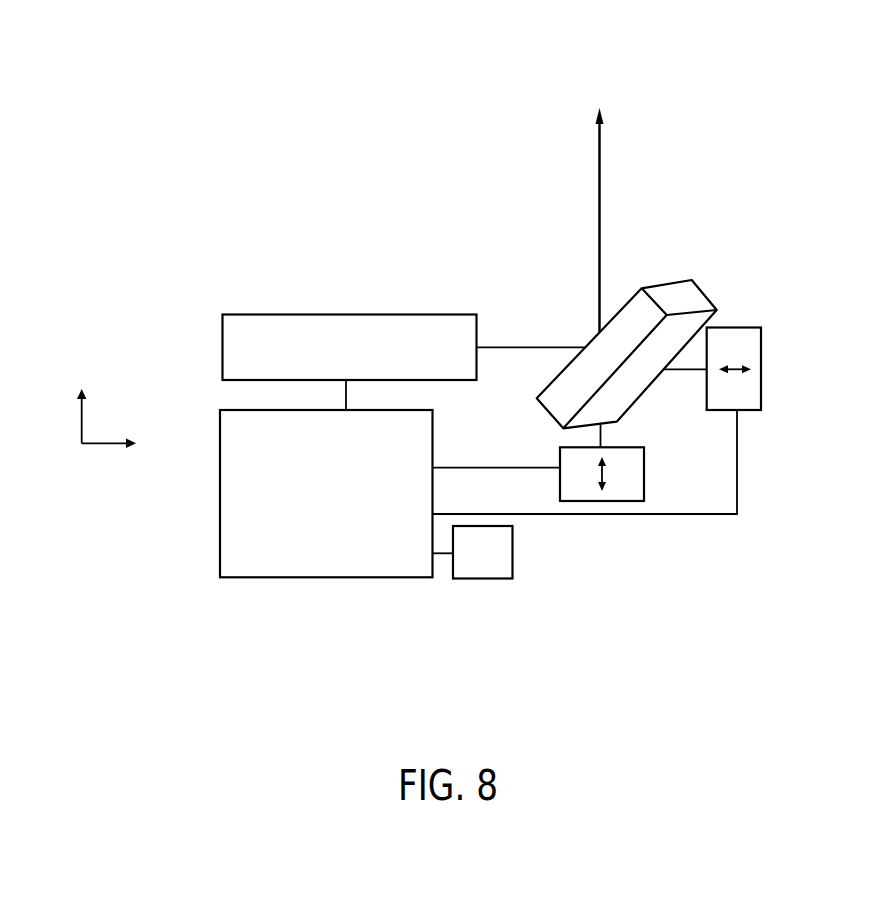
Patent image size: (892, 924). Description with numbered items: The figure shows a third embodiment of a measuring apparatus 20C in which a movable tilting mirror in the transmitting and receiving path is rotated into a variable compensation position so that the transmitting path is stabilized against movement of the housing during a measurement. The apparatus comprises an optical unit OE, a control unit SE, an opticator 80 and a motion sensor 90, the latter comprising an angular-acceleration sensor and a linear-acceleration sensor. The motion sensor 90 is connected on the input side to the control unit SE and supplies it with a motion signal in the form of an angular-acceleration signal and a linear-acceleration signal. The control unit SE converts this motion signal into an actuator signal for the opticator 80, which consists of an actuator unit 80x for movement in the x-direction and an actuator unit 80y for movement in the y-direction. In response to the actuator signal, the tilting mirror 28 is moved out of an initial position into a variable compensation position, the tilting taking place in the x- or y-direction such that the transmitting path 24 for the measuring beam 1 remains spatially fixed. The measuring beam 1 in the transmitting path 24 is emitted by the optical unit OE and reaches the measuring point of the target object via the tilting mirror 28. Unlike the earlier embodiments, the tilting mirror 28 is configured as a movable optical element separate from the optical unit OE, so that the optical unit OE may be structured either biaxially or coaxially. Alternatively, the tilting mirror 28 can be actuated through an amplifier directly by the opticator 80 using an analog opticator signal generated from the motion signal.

The measuring apparatus 20C is at (676, 81).
The measuring beam 1 is at (607, 208).
The transmitting path 24 is at (599, 243).
The tilting mirror 28 is at (703, 292).
The opticator 80 is at (630, 437).
The actuator unit 80x is at (646, 478).
The actuator unit 80y is at (762, 342).
The motion sensor 90 is at (481, 579).
The optical unit OE is at (345, 314).
The control unit SE is at (347, 578).